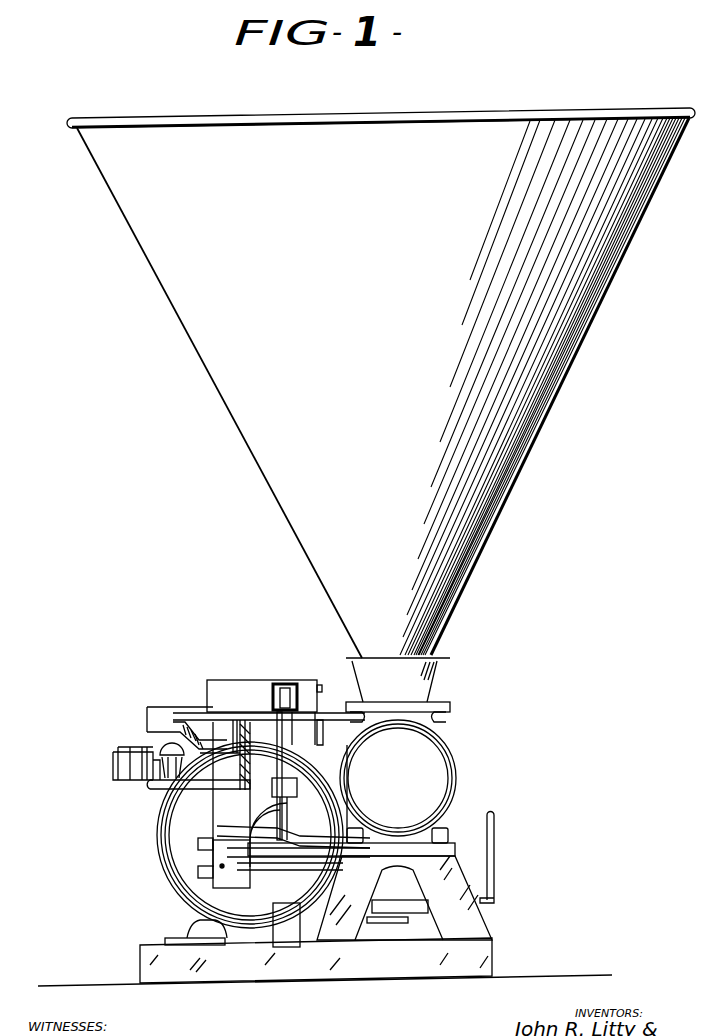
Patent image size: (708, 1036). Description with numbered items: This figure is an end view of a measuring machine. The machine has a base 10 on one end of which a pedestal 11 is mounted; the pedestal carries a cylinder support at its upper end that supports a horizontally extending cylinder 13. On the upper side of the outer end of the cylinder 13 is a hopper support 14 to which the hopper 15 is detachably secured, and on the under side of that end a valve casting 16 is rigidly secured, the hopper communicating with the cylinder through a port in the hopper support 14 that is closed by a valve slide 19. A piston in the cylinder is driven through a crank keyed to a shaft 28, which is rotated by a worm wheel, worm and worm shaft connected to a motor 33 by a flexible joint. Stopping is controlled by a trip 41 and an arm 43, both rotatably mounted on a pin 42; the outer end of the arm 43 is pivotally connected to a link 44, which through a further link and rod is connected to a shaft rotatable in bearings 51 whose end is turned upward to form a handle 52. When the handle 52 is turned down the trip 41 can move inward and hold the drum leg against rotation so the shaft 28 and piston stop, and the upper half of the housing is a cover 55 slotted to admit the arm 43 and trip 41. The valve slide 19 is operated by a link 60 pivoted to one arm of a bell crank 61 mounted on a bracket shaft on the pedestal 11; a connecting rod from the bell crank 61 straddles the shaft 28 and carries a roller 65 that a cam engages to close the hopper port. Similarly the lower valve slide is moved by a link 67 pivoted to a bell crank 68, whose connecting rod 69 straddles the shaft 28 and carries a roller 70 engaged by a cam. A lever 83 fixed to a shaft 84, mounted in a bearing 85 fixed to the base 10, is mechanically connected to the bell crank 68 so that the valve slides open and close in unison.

The base 10 is at (493, 960).
The pedestal 11 is at (472, 927).
The cylinder 13 is at (457, 778).
The hopper support 14 is at (448, 737).
The hopper 15 is at (215, 320).
The valve casting 16 is at (447, 825).
The valve slide 19 is at (215, 710).
The shaft 28 is at (113, 772).
The motor 33 is at (177, 832).
The trip 41 is at (273, 697).
The pin 42 is at (320, 700).
The arm 43 is at (288, 687).
The link 44 is at (293, 690).
The bearings 51 is at (413, 915).
The handle 52 is at (494, 833).
The cover 55 is at (222, 690).
The link 60 is at (187, 707).
The bell crank 61 is at (157, 725).
The roller 65 is at (223, 882).
The link 67 is at (210, 827).
The bell crank 68 is at (153, 788).
The connecting rod 69 is at (153, 805).
The roller 70 is at (140, 768).
The lever 83 is at (380, 923).
The shaft 84 is at (207, 917).
The bearing 85 is at (283, 945).